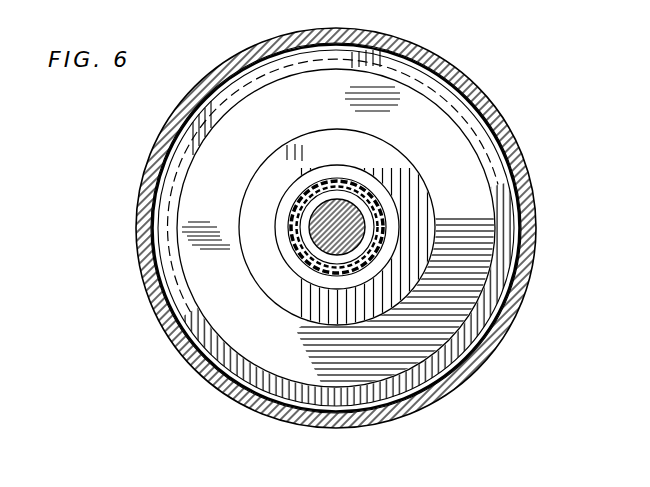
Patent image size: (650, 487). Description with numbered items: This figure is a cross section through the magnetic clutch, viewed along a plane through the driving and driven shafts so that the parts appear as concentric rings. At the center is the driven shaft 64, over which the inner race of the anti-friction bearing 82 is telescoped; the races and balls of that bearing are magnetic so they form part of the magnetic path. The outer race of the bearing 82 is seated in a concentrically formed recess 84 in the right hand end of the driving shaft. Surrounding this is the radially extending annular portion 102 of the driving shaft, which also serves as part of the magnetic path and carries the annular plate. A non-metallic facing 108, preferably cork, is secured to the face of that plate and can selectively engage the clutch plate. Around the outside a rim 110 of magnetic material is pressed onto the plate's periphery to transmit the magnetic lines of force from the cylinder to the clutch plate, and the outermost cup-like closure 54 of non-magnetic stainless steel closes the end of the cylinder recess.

The cup-like closure 54 is at (264, 45).
The driven shaft 64 is at (331, 208).
The anti-friction bearing 82 is at (291, 217).
The recess 84 is at (290, 247).
The radially extending annular portion 102 is at (406, 193).
The non-metallic facing 108 is at (267, 357).
The rim 110 is at (462, 347).